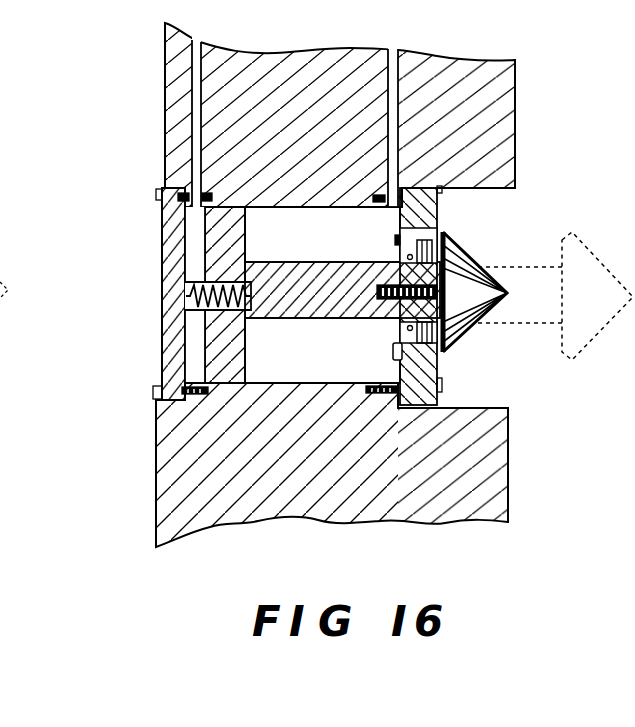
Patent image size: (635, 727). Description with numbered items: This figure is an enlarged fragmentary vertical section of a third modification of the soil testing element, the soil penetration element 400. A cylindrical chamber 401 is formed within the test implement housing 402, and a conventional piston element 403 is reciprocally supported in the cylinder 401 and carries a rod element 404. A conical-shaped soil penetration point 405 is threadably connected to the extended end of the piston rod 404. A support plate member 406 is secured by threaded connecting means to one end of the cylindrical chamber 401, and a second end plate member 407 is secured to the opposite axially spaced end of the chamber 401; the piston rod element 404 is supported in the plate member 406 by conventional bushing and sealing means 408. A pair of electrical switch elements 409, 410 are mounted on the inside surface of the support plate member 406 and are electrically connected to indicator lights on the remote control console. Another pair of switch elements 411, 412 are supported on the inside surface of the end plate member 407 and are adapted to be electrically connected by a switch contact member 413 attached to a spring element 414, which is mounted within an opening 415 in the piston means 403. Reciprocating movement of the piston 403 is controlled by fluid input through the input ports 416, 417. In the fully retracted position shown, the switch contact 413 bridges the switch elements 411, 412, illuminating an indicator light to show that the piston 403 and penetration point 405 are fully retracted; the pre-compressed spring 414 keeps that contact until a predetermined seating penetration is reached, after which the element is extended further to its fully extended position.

The soil penetration element 400 is at (510, 212).
The cylindrical chamber 401 is at (256, 383).
The test implement housing 402 is at (440, 56).
The piston element 403 is at (246, 338).
The rod element 404 is at (353, 262).
The conical-shaped soil penetration point 405 is at (470, 263).
The support plate member 406 is at (440, 368).
The second end plate member 407 is at (160, 367).
The bushing and sealing means 408 is at (400, 325).
The electrical switch element 409 is at (396, 239).
The electrical switch element 410 is at (396, 350).
The switch element 411 is at (183, 287).
The switch element 412 is at (205, 303).
The switch contact member 413 is at (186, 296).
The spring element 414 is at (278, 246).
The opening 415 is at (190, 312).
The input port 416 is at (199, 42).
The input port 417 is at (392, 49).